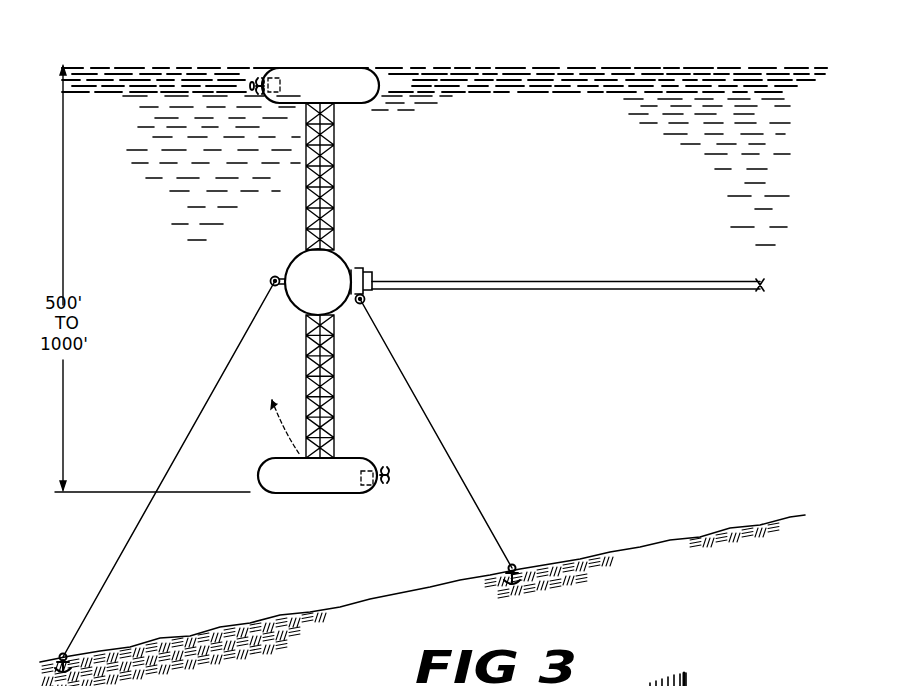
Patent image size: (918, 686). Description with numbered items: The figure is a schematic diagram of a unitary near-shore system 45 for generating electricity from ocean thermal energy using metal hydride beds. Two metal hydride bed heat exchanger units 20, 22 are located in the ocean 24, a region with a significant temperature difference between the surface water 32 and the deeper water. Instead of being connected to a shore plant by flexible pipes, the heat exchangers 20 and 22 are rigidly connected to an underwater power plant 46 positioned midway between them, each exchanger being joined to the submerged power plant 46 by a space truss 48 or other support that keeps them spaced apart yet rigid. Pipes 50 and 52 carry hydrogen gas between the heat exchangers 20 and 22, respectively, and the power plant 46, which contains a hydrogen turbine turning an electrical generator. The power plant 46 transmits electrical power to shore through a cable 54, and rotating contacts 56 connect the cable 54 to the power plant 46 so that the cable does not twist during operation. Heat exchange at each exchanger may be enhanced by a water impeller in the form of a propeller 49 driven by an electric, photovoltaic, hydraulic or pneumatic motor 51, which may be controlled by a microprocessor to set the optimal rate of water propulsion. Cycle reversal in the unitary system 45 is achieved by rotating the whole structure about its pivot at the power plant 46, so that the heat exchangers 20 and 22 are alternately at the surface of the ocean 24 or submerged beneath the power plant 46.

The metal hydride bed heat exchanger unit 20 is at (305, 68).
The metal hydride bed heat exchanger unit 22 is at (336, 492).
The ocean 24 is at (580, 188).
The surface water 32 is at (487, 66).
The unitary near-shore system 45 is at (477, 280).
The underwater power plant 46 is at (292, 258).
The space truss 48 is at (306, 156).
The propeller 49 is at (254, 92).
The pipe 50 is at (334, 106).
The motor 51 is at (275, 72).
The pipe 52 is at (305, 345).
The cable 54 is at (584, 280).
The rotating contacts 56 is at (360, 268).